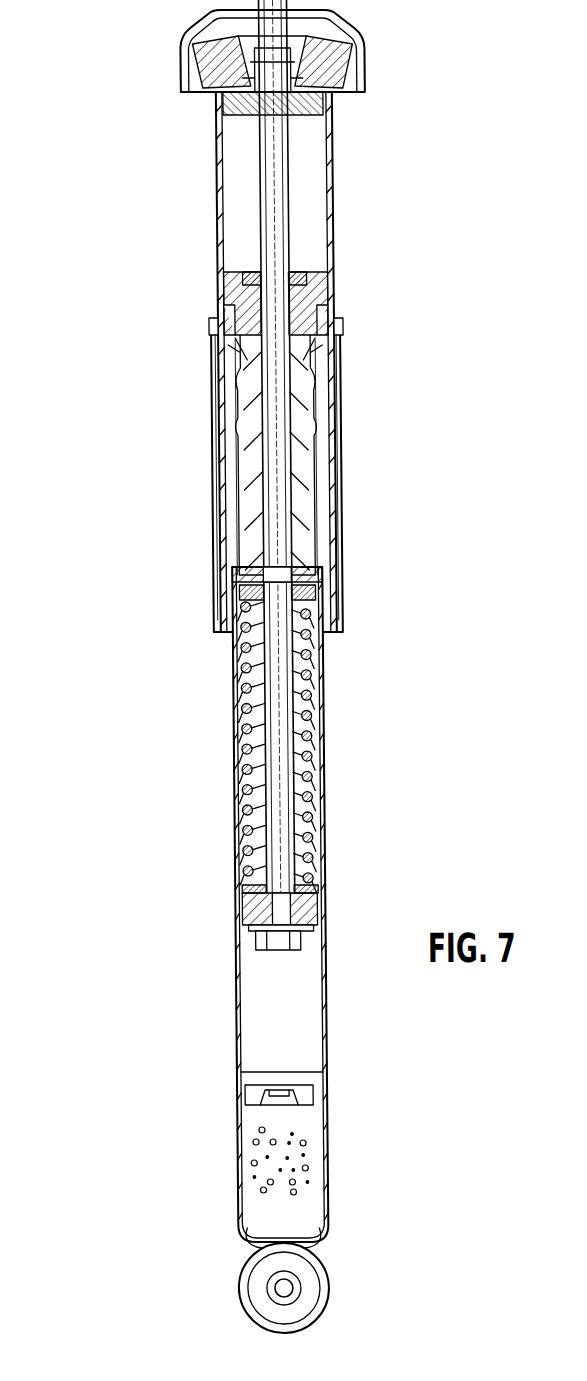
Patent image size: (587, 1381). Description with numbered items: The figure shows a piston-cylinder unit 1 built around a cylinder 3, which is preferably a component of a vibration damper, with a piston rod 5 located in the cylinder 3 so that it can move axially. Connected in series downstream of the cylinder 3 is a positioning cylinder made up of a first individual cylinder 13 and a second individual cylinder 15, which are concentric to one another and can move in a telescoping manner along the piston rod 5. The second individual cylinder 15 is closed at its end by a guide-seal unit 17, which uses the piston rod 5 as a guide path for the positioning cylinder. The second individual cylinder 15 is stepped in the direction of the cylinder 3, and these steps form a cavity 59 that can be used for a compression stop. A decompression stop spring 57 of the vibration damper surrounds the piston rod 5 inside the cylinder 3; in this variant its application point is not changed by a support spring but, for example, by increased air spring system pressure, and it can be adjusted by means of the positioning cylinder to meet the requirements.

The piston-cylinder unit 1 is at (82, 716).
The cylinder 3 is at (227, 990).
The piston rod 5 is at (264, 130).
The first individual cylinder 13 is at (214, 182).
The second individual cylinder 15 is at (221, 402).
The guide-seal unit 17 is at (232, 296).
The decompression stop spring 57 is at (230, 693).
The cavity 59 is at (254, 358).